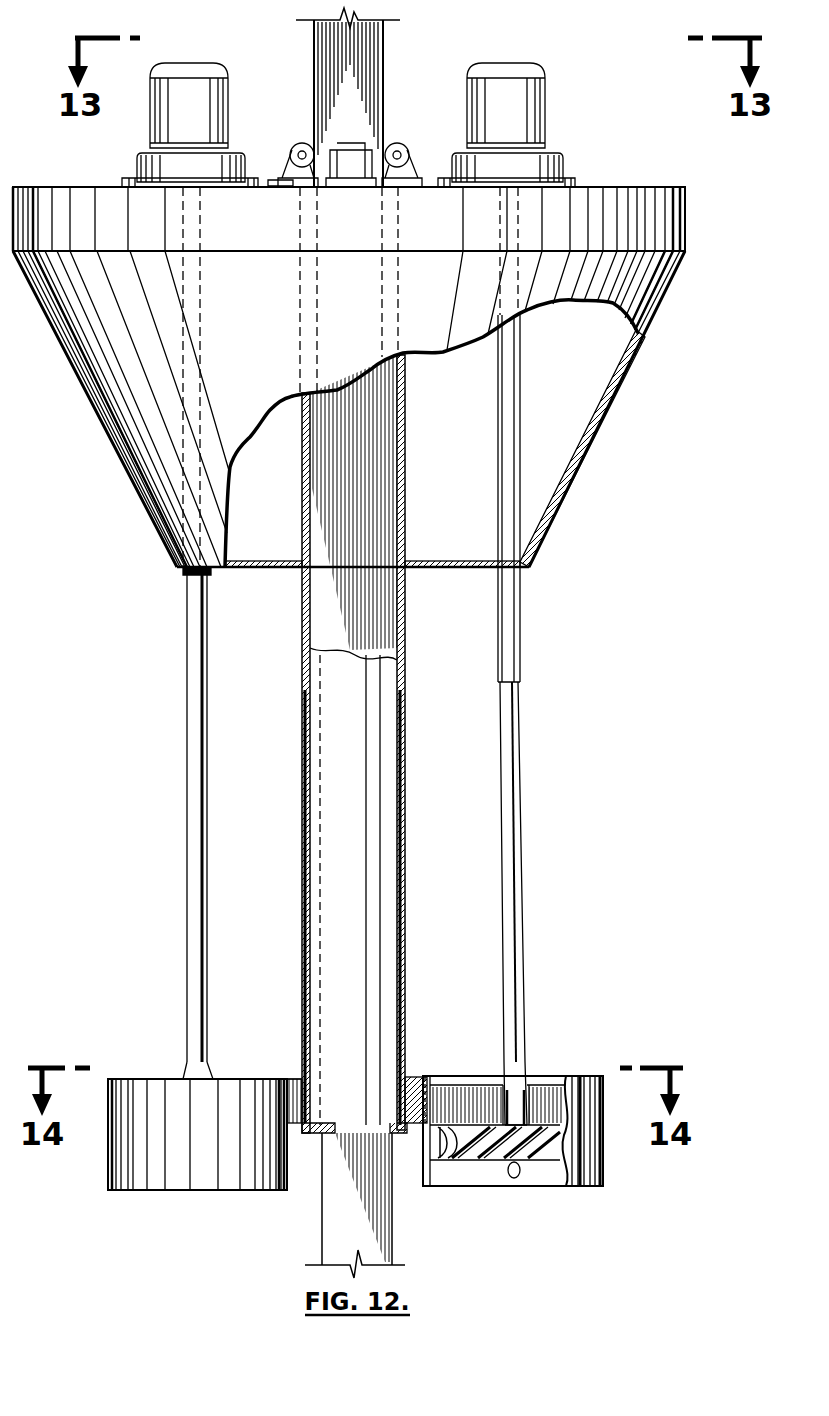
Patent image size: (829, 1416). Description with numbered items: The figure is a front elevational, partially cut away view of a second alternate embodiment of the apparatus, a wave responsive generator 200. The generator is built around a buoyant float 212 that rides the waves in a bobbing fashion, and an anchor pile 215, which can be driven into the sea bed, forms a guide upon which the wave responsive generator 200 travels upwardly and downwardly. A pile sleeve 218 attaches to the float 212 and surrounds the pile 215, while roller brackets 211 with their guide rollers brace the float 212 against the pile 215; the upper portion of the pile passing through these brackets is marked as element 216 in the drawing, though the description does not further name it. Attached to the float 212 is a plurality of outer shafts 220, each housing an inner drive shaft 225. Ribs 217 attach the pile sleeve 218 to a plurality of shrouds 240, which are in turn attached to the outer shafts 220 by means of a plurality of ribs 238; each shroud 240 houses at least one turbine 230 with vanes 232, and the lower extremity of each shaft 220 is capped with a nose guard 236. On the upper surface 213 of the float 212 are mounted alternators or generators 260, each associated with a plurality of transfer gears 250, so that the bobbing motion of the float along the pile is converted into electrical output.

The wave responsive generator 200 is at (601, 32).
The roller brackets 211 is at (280, 148).
The buoyant float 212 is at (352, 145).
The upper surface 213 is at (628, 183).
The anchor pile 215 is at (352, 593).
The upper cable portion 216 is at (312, 80).
The ribs 217 is at (298, 1083).
The pile sleeve 218 is at (405, 470).
The outer shafts 220 is at (187, 890).
The inner drive shaft 225 is at (520, 395).
The turbine 230 is at (470, 1118).
The vanes 232 is at (455, 1160).
The nose guard 236 is at (514, 1180).
The ribs 238 is at (550, 1100).
The shrouds 240 is at (230, 1175).
The transfer gears 250 is at (140, 172).
The alternator 260 is at (178, 73).